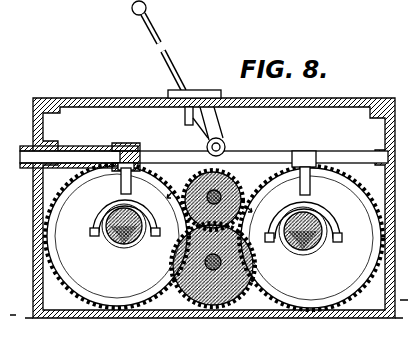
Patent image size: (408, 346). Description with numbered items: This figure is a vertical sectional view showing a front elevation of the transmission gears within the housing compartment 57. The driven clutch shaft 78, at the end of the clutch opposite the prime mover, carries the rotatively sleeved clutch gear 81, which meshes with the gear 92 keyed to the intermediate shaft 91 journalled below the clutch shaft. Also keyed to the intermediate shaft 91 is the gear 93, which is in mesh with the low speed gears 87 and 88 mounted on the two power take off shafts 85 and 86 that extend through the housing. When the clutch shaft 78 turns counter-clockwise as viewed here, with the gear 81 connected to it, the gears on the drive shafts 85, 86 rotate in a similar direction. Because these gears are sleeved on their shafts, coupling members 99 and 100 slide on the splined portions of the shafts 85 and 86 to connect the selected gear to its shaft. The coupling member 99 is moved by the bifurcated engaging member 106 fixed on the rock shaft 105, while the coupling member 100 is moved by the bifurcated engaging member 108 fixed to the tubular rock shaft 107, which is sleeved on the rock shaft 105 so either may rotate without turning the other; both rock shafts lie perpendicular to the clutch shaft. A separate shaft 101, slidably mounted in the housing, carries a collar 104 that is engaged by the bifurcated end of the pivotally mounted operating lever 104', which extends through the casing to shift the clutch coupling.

The compartment 57 is at (94, 311).
The driven shaft 78 is at (214, 196).
The gear 81 is at (238, 178).
The power take off shaft 85 is at (298, 248).
The power take off shaft 86 is at (128, 252).
The low speed gear 87 is at (333, 278).
The low speed gear 88 is at (56, 258).
The intermediate shaft 91 is at (183, 296).
The gear 92 is at (207, 296).
The gear 93 is at (226, 311).
The coupling member 99 is at (322, 250).
The coupling member 100 is at (112, 232).
The shaft 101 is at (206, 146).
The collar 104 is at (232, 136).
The operating lever 104' is at (176, 49).
The rock shaft 105 is at (345, 162).
The bifurcated engaging member 106 is at (310, 174).
The tubular rock shaft 107 is at (97, 143).
The bifurcated engaging member 108 is at (140, 183).